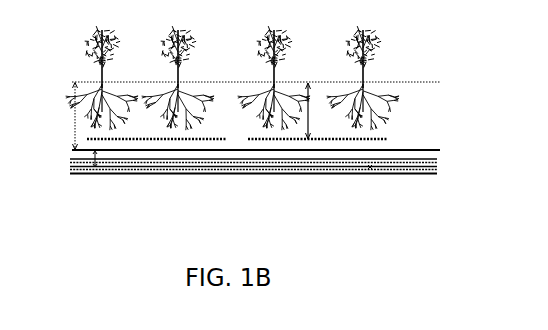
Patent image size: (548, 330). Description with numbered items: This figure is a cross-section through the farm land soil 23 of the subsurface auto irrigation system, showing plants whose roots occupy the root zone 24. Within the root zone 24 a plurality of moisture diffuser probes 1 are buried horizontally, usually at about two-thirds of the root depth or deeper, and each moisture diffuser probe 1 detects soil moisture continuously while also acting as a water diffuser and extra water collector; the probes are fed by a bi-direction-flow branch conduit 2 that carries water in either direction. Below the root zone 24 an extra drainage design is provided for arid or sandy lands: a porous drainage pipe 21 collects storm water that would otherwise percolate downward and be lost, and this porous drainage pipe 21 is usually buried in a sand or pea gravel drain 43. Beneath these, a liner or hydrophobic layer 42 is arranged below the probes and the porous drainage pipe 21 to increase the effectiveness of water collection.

The moisture diffuser probe 1 is at (222, 132).
The bi-direction-flow branch conduit 2 is at (153, 130).
The porous drainage pipe 21 is at (396, 148).
The farm land soil 23 is at (61, 116).
The root zone 24 is at (321, 111).
The liner or hydrophobic layer 42 is at (384, 173).
The sand or pea gravel drain 43 is at (92, 176).